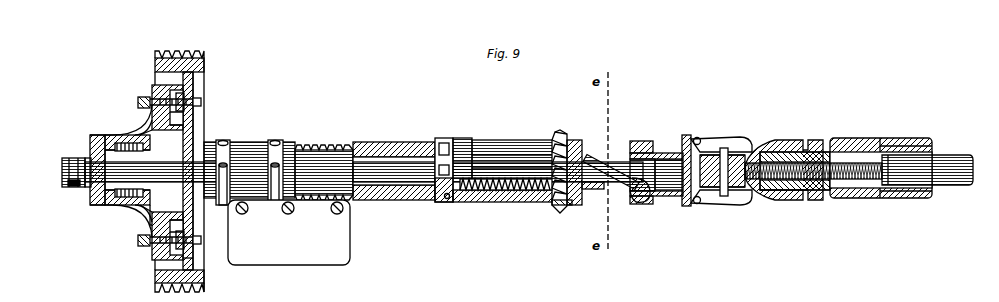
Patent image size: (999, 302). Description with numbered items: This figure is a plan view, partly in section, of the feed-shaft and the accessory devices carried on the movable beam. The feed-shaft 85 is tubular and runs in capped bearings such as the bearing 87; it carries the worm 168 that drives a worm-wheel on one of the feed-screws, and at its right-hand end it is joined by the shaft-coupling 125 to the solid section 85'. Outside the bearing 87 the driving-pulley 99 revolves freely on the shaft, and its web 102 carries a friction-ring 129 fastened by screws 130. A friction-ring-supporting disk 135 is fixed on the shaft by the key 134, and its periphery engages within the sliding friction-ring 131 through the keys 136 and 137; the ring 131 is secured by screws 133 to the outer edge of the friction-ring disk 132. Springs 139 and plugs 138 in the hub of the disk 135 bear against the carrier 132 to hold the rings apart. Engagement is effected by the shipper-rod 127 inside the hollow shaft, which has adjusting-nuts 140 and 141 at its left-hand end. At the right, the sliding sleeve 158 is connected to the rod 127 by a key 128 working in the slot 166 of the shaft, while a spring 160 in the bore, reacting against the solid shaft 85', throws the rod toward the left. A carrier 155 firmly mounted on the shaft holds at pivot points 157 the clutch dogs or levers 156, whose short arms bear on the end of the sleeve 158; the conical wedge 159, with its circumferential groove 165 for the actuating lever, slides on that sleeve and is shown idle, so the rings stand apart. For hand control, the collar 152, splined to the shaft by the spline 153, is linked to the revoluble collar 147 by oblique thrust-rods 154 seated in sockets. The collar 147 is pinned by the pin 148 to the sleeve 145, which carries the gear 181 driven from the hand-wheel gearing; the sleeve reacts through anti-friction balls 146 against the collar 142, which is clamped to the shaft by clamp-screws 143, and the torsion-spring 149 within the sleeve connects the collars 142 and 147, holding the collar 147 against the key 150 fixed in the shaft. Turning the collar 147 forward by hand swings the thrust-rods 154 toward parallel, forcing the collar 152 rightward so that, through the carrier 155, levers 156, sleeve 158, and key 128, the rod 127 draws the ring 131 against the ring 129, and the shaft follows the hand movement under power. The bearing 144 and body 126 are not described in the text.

The driving-pulley 99 is at (183, 50).
The sliding friction-ring 131 is at (165, 92).
The screws 133 is at (146, 103).
The friction-ring 129 is at (196, 89).
The screws 130 is at (201, 102).
The key 136 is at (184, 121).
The key 134 is at (92, 195).
The plugs 138 is at (115, 146).
The springs 139 is at (130, 135).
The friction-ring disk 132 is at (100, 135).
The friction-ring-supporting disk 135 is at (158, 130).
The key 137 is at (148, 218).
The adjusting-nut 141 is at (87, 167).
The adjusting-nut 140 is at (89, 160).
The shipper-rod 127 is at (62, 174).
The worm 168 is at (326, 143).
The feed-shaft 85 is at (498, 158).
The bearing 87 is at (273, 255).
The web 102 is at (186, 258).
The clamp-screws 143 is at (444, 143).
The collar 142 is at (455, 142).
The sleeve 145 is at (515, 140).
The housing 144 is at (470, 202).
The torsion-spring 149 is at (522, 202).
The anti-friction rollers or balls 146 is at (447, 199).
The revoluble collar 147 is at (572, 140).
The gear 181 is at (558, 132).
The thrust-rods 154 is at (600, 158).
The key 150 is at (586, 189).
The pin 148 is at (576, 206).
The collar 152 is at (634, 204).
The key or spline 153 is at (652, 141).
The carrier 155 is at (687, 135).
The pivot points 157 is at (697, 204).
The slot 166 is at (748, 134).
The key 128 is at (722, 189).
The clutch dogs or levers 156 is at (724, 148).
The sliding sleeve 158 is at (783, 140).
The circumferential groove 165 is at (813, 140).
The conical sleeve or wedge 159 is at (795, 201).
The body 126 is at (860, 139).
The shaft-coupling 125 is at (905, 139).
The spring 160 is at (870, 182).
The solid shaft section 85' is at (927, 157).